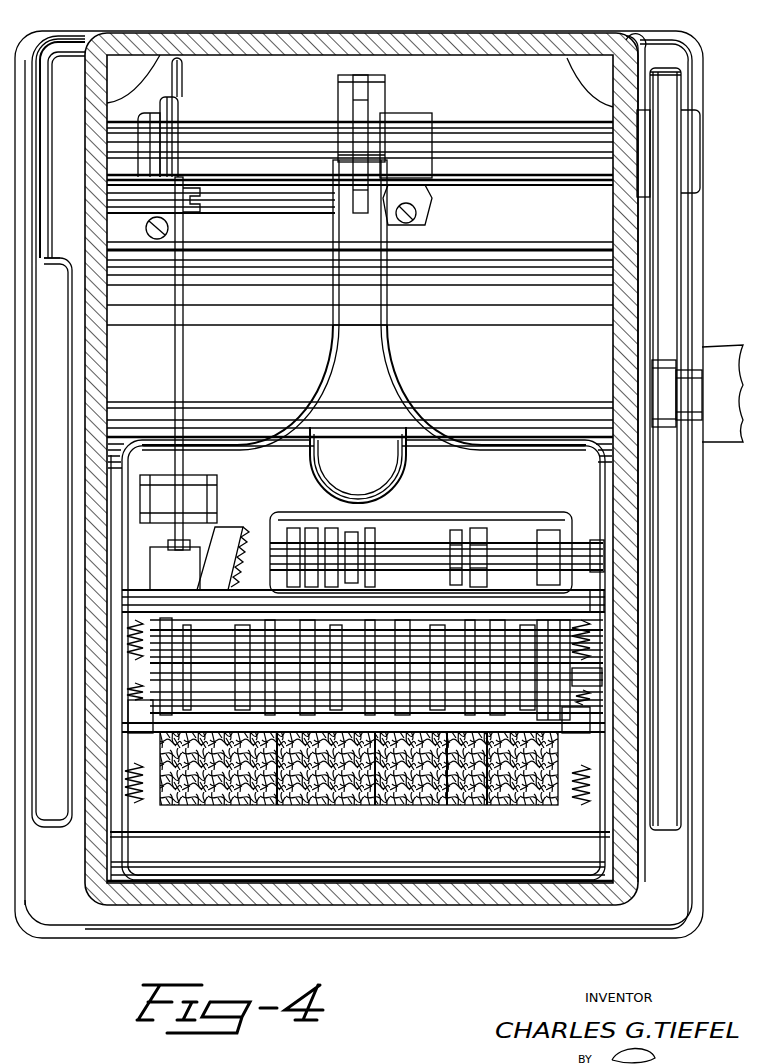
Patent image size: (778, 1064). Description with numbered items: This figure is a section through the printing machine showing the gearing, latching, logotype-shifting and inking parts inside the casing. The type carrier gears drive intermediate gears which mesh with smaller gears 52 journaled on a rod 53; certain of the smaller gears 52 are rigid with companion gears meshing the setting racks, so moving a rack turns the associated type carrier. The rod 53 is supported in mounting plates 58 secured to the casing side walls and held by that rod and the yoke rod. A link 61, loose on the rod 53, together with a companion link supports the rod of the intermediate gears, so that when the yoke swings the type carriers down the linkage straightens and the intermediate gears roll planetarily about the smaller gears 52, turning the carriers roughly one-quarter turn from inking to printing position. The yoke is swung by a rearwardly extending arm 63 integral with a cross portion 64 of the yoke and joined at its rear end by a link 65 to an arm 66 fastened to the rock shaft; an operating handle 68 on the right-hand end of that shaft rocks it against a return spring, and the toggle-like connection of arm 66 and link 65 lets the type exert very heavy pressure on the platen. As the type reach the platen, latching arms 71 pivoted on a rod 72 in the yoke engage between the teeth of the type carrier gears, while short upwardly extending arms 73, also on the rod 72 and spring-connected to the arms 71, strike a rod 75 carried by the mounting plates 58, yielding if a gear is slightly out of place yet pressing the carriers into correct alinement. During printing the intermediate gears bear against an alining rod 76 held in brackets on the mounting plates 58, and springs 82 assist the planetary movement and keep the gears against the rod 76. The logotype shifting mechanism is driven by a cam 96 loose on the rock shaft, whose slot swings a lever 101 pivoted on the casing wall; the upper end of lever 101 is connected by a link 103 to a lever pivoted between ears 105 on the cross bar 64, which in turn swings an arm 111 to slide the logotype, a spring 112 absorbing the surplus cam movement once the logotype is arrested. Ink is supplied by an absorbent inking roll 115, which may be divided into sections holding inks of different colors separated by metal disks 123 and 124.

The smaller gears 52 is at (562, 678).
The rod 53 is at (586, 690).
The mounting plates 58 is at (128, 670).
The link 61 is at (132, 636).
The rearwardly extending arm 63 is at (346, 222).
The cross portion 64 is at (456, 450).
The link 65 is at (362, 138).
The arm 66 is at (346, 114).
The operating handle 68 is at (668, 225).
The latching arms 71 is at (498, 528).
The rod 72 is at (412, 548).
The short upwardly extending arm 73 is at (478, 528).
The rod 75 is at (500, 605).
The rod 76 is at (128, 718).
The springs 82 is at (596, 636).
The cam 96 is at (178, 106).
The lever 101 is at (198, 208).
The link 103 is at (183, 372).
The ears 105 is at (210, 498).
The arm 111 is at (202, 580).
The spring 112 is at (223, 558).
The inking roll 115 is at (487, 803).
The metal disks 123 is at (368, 806).
The metal disks 124 is at (441, 806).